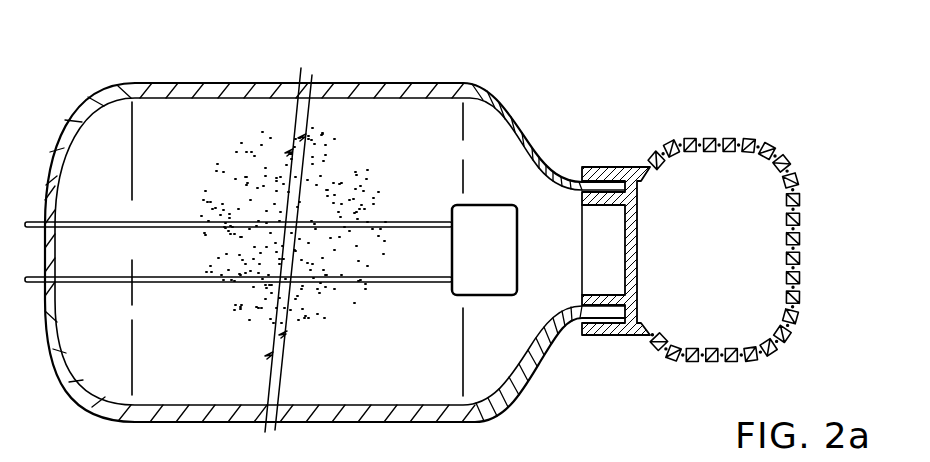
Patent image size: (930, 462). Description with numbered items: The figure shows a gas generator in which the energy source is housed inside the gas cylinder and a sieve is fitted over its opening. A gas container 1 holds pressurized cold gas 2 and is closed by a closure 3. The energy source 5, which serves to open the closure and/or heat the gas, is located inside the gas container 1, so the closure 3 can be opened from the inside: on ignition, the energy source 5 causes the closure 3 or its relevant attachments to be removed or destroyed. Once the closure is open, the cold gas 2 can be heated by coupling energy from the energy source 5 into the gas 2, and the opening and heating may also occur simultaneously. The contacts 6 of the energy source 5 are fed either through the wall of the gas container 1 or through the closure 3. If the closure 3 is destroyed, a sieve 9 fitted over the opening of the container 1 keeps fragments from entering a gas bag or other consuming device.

The gas container 1 is at (325, 79).
The cold gas 2 is at (354, 147).
The closure 3 is at (638, 252).
The energy source 5 is at (483, 298).
The contacts 6 is at (402, 292).
The sieve 9 is at (752, 134).